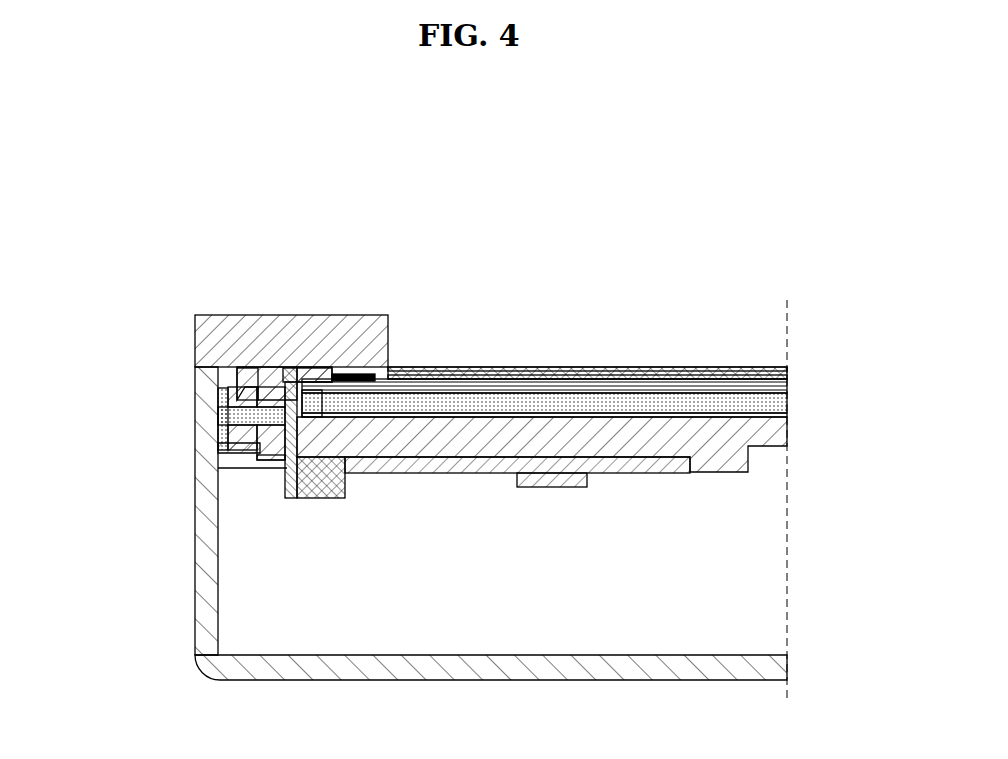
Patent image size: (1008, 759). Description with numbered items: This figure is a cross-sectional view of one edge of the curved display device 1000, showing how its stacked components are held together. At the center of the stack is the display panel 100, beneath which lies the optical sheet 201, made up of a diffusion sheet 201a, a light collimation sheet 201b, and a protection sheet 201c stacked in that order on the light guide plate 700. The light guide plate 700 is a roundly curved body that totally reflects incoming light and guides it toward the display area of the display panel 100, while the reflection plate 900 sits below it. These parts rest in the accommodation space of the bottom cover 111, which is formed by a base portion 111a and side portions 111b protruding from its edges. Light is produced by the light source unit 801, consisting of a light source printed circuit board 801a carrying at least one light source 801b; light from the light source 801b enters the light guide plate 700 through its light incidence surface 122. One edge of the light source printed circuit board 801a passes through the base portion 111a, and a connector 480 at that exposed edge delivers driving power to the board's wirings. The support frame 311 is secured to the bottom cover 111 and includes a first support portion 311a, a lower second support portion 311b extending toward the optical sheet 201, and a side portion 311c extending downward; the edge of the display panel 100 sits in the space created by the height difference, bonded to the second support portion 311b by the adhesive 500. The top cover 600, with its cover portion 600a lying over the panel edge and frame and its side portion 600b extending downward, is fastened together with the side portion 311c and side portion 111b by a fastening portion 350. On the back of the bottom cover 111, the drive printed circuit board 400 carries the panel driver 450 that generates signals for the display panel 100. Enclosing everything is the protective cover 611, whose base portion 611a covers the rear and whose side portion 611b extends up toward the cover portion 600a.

The curved display device 1000 is at (746, 205).
The top cover 600 is at (108, 325).
The cover portion 600a is at (208, 333).
The side portion 600b is at (225, 374).
The support frame 311 is at (397, 243).
The first support portion 311a is at (291, 382).
The second support portion 311b is at (355, 370).
The side portion 311c is at (252, 372).
The adhesive 500 is at (364, 374).
The optical sheet 201 is at (720, 300).
The diffusion sheet 201a is at (575, 367).
The light collimation sheet 201b is at (642, 367).
The protection sheet 201c is at (712, 367).
The display panel 100 is at (787, 373).
The light guide plate 700 is at (787, 397).
The reflection plate 900 is at (787, 418).
The drive printed circuit board 400 is at (600, 473).
The panel driver 450 is at (583, 488).
The fastening portion 350 is at (228, 416).
The bottom cover 111 is at (113, 462).
The base portion 111a is at (250, 470).
The side portion 111b is at (240, 445).
The connector 480 is at (290, 468).
The light incidence surface 122 is at (323, 398).
The light source unit 801 is at (387, 562).
The light source printed circuit board 801a is at (289, 498).
The light source 801b is at (330, 498).
The protective cover 611 is at (110, 575).
The base portion 611a is at (305, 670).
The side portion 611b is at (205, 588).